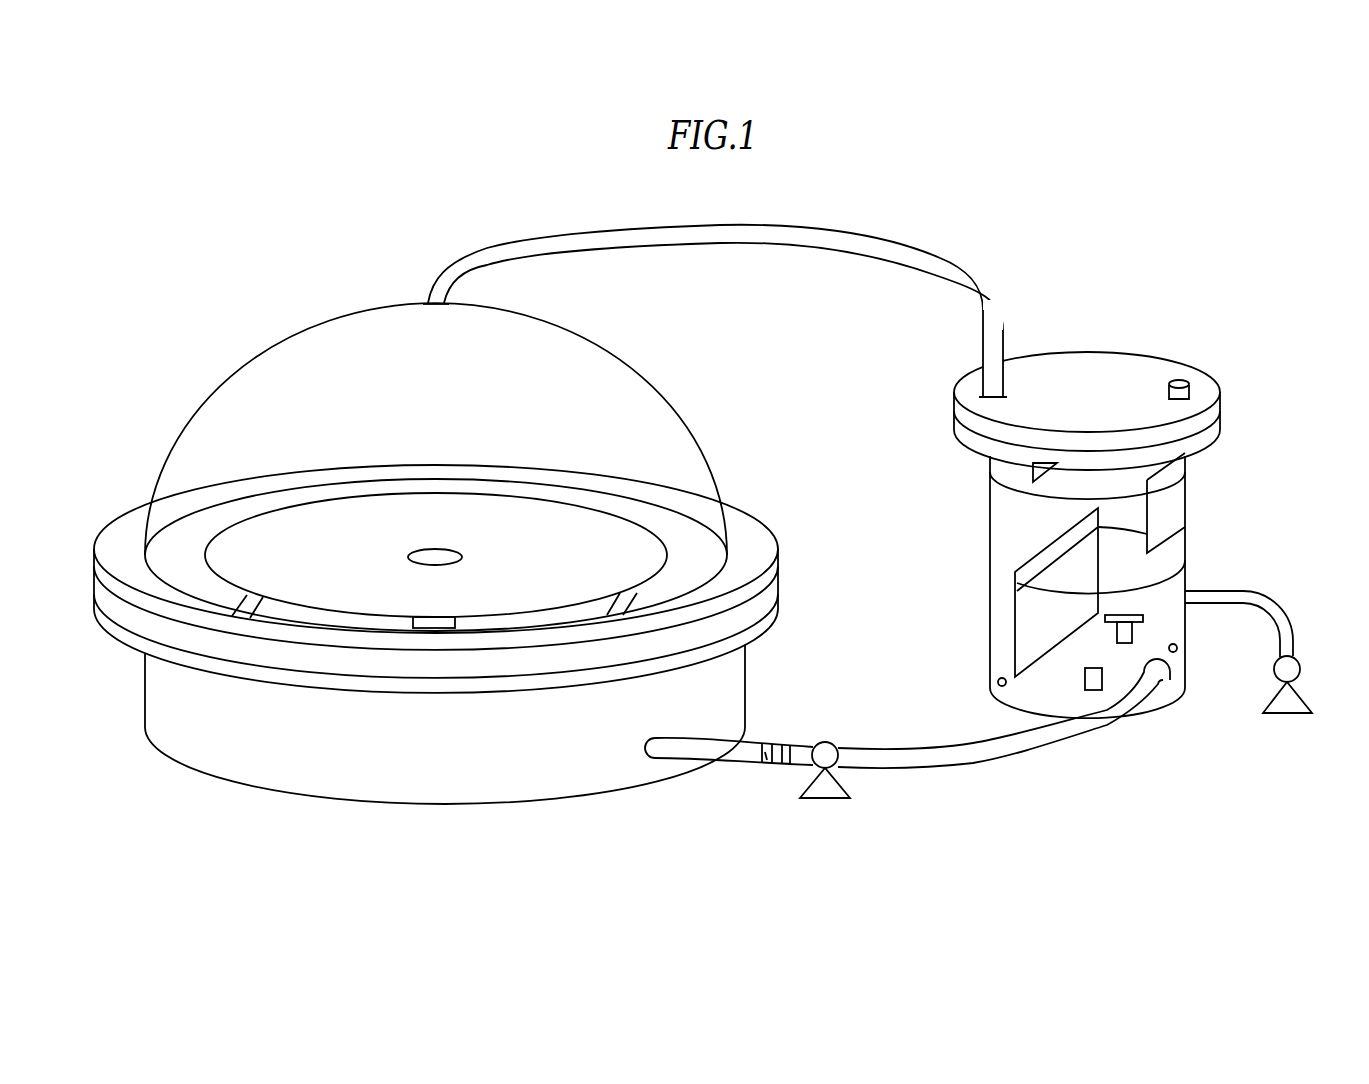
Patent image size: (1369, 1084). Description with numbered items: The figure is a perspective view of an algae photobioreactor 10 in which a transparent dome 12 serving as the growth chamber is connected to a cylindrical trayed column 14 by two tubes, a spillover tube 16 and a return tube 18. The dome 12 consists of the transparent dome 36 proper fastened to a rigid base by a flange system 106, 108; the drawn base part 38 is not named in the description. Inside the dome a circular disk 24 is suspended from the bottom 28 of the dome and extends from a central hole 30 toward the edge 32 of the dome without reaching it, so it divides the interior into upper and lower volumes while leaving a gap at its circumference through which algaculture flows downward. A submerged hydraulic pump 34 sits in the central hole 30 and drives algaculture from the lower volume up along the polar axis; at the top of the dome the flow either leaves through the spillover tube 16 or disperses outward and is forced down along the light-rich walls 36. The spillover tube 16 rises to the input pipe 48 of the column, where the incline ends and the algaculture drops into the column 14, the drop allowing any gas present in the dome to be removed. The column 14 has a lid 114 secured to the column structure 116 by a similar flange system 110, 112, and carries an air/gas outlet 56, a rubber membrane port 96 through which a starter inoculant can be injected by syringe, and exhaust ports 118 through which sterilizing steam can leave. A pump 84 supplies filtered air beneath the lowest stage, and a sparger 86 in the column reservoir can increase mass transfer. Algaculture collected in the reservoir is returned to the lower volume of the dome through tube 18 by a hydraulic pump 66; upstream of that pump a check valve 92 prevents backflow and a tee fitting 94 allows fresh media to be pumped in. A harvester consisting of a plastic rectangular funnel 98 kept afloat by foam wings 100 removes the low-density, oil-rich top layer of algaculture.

The algae photobioreactor 10 is at (232, 226).
The dome 12 is at (207, 383).
The column 14 is at (1195, 505).
The spillover tube 16 is at (490, 252).
The tube 18 is at (753, 767).
The disk 24 is at (597, 522).
The bottom of the dome 28 is at (472, 808).
The central hole 30 is at (448, 547).
The edge of the dome 32 is at (673, 600).
The submerged hydraulic pump 34 is at (441, 628).
The dome walls 36 is at (297, 334).
The base side wall 38 is at (145, 690).
The input pipe 48 is at (1005, 325).
The air/gas outlet 56 is at (1182, 378).
The hydraulic pump 66 is at (830, 800).
The pump 84 is at (1290, 713).
The sparger 86 is at (1100, 688).
The check valve 92 is at (787, 746).
The tee fitting 94 is at (763, 764).
The rubber membrane port 96 is at (1178, 650).
The plastic rectangular funnel 98 is at (1137, 632).
The foam wings 100 is at (1143, 612).
The flange system 106 is at (740, 528).
The flange system 108 is at (338, 682).
The flange system 110 is at (1206, 418).
The flange system 112 is at (1206, 440).
The lid 114 is at (1105, 370).
The column structure 116 is at (990, 510).
The exhaust ports 118 is at (998, 682).